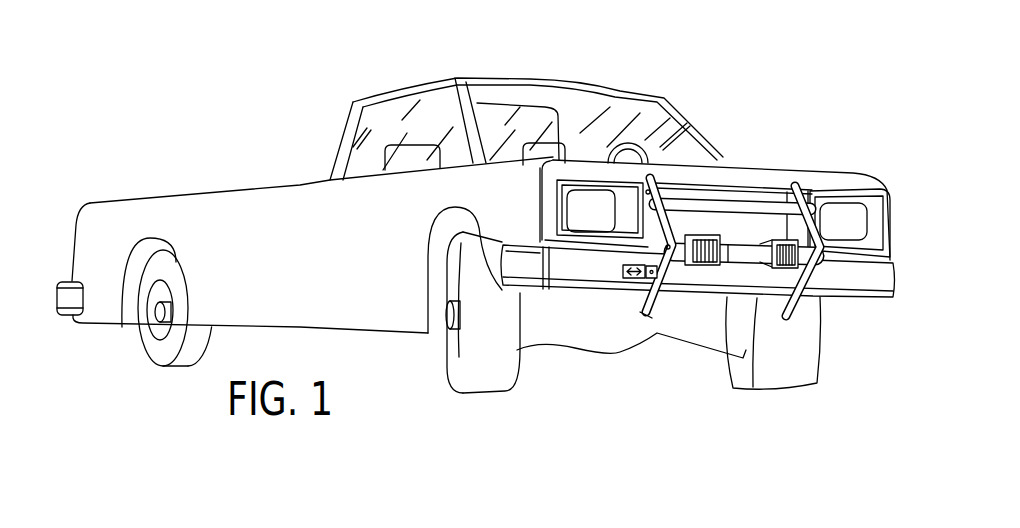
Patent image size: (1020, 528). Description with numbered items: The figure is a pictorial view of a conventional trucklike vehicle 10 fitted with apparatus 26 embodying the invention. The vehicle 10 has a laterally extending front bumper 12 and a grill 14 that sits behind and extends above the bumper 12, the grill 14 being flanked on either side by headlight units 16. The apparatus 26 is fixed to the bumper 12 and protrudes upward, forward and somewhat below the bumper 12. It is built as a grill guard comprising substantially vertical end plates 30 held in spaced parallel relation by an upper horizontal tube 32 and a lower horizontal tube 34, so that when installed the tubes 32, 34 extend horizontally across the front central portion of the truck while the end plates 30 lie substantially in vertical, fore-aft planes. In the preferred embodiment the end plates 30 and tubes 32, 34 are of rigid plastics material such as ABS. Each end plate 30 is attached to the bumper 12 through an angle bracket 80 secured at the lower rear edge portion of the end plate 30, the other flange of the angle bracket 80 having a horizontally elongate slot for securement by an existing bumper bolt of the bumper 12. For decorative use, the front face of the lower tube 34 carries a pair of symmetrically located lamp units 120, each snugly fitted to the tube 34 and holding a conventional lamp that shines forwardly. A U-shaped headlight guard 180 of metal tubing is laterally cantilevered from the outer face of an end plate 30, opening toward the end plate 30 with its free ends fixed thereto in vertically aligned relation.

The trucklike vehicle 10 is at (422, 368).
The front bumper 12 is at (868, 287).
The grill 14 is at (756, 262).
The headlight units 16 is at (582, 210).
The apparatus 26 is at (655, 320).
The end plates 30 is at (665, 253).
The upper horizontal tube 32 is at (770, 195).
The lower horizontal tube 34 is at (742, 253).
The angle bracket 80 is at (633, 279).
The lamp units 120 is at (705, 238).
The headlight guard 180 is at (590, 248).